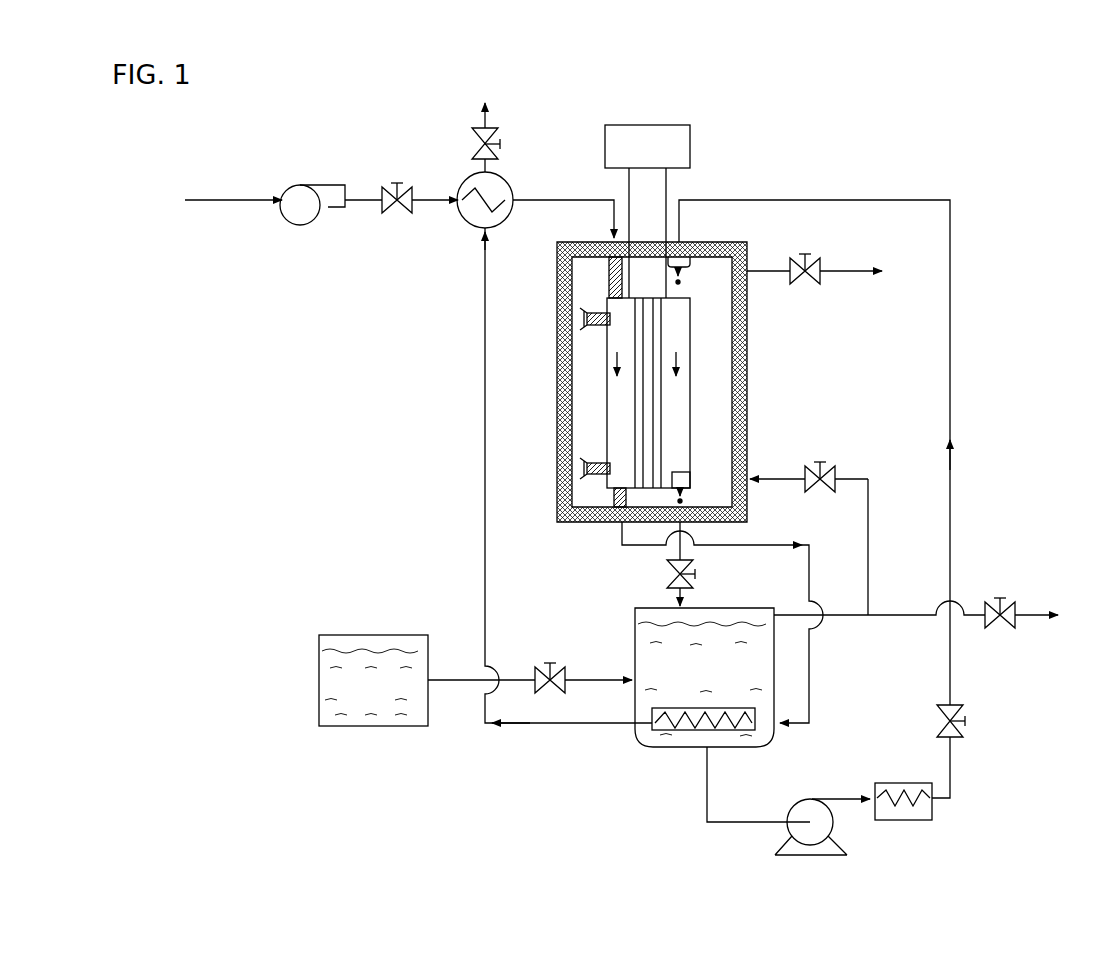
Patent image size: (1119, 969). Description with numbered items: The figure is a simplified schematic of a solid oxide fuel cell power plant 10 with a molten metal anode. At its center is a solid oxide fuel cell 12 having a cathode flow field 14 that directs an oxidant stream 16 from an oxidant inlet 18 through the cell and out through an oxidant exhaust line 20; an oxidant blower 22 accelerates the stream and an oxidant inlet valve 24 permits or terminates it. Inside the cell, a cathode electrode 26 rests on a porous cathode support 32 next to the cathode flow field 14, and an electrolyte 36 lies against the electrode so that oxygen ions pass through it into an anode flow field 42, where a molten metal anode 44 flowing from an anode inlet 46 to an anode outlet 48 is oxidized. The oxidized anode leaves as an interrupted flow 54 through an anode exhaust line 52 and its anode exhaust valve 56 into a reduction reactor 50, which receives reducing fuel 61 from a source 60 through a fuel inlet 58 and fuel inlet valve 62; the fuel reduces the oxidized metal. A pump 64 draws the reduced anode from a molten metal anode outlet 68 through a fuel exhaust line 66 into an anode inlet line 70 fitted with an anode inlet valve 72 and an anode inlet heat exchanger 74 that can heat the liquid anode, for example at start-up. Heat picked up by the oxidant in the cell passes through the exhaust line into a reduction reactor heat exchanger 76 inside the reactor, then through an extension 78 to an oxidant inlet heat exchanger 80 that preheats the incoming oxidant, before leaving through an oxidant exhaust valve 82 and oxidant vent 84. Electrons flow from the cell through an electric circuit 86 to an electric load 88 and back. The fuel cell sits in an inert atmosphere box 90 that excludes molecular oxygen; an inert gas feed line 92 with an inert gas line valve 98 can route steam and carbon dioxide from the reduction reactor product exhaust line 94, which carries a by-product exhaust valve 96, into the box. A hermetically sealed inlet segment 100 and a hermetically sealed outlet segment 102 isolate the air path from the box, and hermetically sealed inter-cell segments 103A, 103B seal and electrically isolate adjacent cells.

The solid oxide fuel cell power plant 10 is at (1070, 145).
The solid oxide fuel cell 12 is at (661, 365).
The cathode flow field 14 is at (612, 358).
The oxidant stream 16 is at (215, 202).
The oxidant inlet 18 is at (362, 204).
The oxidant exhaust line 20 is at (637, 548).
The oxidant blower 22 is at (303, 188).
The oxidant inlet valve 24 is at (407, 185).
The cathode electrode 26 is at (648, 393).
The porous cathode support 32 is at (637, 442).
The electrolyte 36 is at (662, 402).
The anode flow field 42 is at (680, 348).
The molten metal anode 44 is at (748, 285).
The anode inlet 46 is at (752, 262).
The anode outlet 48 is at (748, 450).
The reduction reactor 50 is at (635, 628).
The anode exhaust line 52 is at (683, 552).
The interrupted flow 54 is at (748, 493).
The anode exhaust valve 56 is at (697, 576).
The fuel inlet 58 is at (466, 677).
The source of reducing fuel 60 is at (348, 707).
The reducing fuel 61 is at (322, 692).
The fuel inlet valve 62 is at (549, 663).
The pump 64 is at (802, 808).
The fuel exhaust line 66 is at (705, 806).
The molten metal anode outlet 68 is at (705, 757).
The anode inlet line 70 is at (838, 200).
The anode inlet valve 72 is at (968, 724).
The anode inlet heat exchanger 74 is at (918, 822).
The reduction reactor heat exchanger 76 is at (652, 728).
The extension of the oxidant exhaust line 78 is at (483, 512).
The oxidant inlet heat exchanger 80 is at (470, 222).
The oxidant exhaust valve 82 is at (502, 146).
The oxidant vent 84 is at (492, 107).
The electric circuit 86 is at (627, 196).
The electric load 88 is at (692, 140).
The inert atmosphere box 90 is at (573, 288).
The inert gas feed line 92 is at (870, 512).
The reduction reactor product exhaust line 94 is at (905, 613).
The by-product exhaust valve 96 is at (1000, 598).
The inert gas line valve 98 is at (822, 462).
The hermetically sealed inlet segment 100 is at (609, 285).
The hermetically sealed outlet segment 102 is at (616, 497).
The hermetically sealed inter-cell segment 103A is at (600, 327).
The hermetically sealed inter-cell segment 103B is at (600, 476).